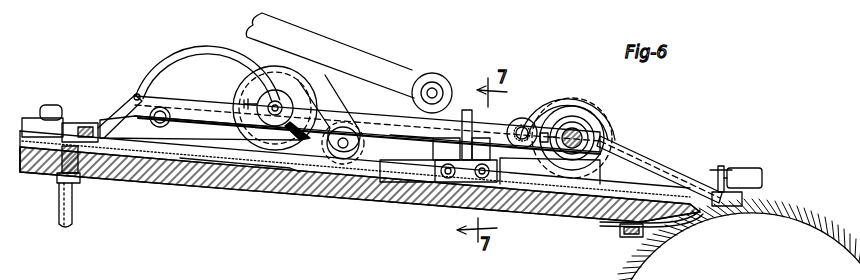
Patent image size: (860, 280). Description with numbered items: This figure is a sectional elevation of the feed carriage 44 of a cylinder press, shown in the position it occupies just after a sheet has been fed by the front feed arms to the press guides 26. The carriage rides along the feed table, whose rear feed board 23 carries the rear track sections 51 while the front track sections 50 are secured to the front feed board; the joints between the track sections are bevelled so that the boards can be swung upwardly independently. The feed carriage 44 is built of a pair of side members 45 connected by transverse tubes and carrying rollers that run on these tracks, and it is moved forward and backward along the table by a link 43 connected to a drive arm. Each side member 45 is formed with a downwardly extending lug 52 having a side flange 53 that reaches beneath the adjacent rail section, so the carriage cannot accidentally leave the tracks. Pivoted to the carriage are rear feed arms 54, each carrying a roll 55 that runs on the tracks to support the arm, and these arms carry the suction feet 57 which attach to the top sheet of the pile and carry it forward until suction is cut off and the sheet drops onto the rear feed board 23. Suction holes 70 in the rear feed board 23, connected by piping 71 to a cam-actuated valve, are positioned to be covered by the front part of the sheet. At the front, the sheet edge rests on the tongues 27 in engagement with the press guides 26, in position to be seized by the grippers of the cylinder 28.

The rear feed board 23 is at (188, 180).
The press guides 26 is at (762, 205).
The tongues 27 is at (682, 238).
The cylinder 28 is at (635, 270).
The link 43 is at (332, 47).
The feed carriage 44 is at (463, 117).
The side members 45 is at (363, 110).
The front track sections 50 is at (598, 183).
The rear track sections 51 is at (228, 148).
The lug 52 is at (500, 160).
The side flange 53 is at (396, 195).
The rear feed arms 54 is at (194, 100).
The roll 55 is at (200, 123).
The suction feet 57 is at (72, 117).
The suction holes 70 is at (92, 178).
The piping 71 is at (75, 216).